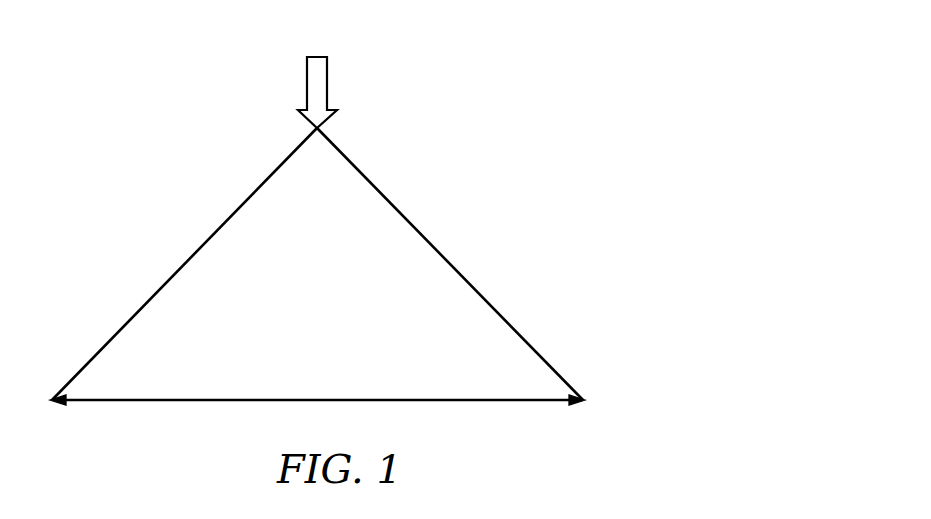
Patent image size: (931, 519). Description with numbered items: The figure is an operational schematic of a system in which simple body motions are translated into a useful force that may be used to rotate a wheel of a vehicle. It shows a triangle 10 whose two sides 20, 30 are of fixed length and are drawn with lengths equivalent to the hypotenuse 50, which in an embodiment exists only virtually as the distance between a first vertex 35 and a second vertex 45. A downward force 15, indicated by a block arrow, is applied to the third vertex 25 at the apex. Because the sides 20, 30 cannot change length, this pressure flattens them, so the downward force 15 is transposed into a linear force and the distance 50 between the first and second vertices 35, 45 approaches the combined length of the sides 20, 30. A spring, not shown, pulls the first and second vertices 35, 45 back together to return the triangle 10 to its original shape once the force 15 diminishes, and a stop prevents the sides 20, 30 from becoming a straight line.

The triangle 10 is at (493, 145).
The force 15 is at (330, 82).
The side 20 is at (218, 228).
The third vertex 25 is at (313, 128).
The side 30 is at (427, 237).
The first vertex 35 is at (52, 402).
The second vertex 45 is at (588, 398).
The hypotenuse 50 is at (313, 398).